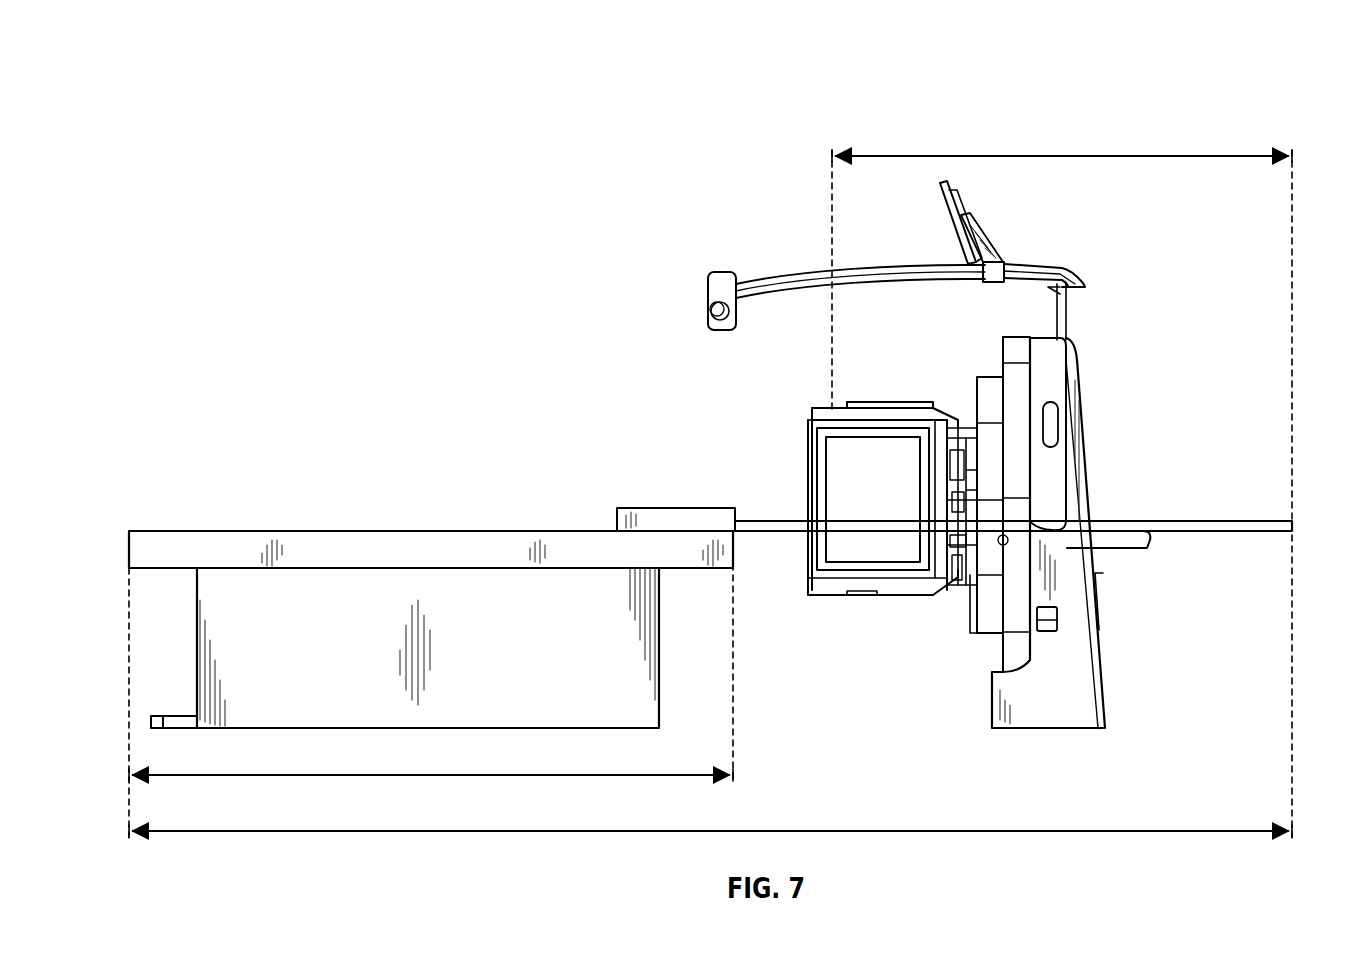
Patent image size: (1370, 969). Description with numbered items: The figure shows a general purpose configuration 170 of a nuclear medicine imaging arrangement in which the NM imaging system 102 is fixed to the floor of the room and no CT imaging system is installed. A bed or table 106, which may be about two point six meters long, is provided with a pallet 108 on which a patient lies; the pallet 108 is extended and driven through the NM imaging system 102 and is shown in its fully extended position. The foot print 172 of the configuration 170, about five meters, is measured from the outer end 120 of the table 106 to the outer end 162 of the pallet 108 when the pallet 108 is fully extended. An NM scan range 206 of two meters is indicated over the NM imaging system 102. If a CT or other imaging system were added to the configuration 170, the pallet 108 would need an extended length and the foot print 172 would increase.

The NM imaging system 102 is at (1105, 133).
The table 106 is at (208, 528).
The pallet 108 is at (760, 520).
The outer end of the table 120 is at (126, 550).
The outer end of the pallet 162 is at (1302, 527).
The general purpose configuration 170 is at (625, 145).
The foot print 172 is at (713, 831).
The NM scan range 206 is at (1060, 157).